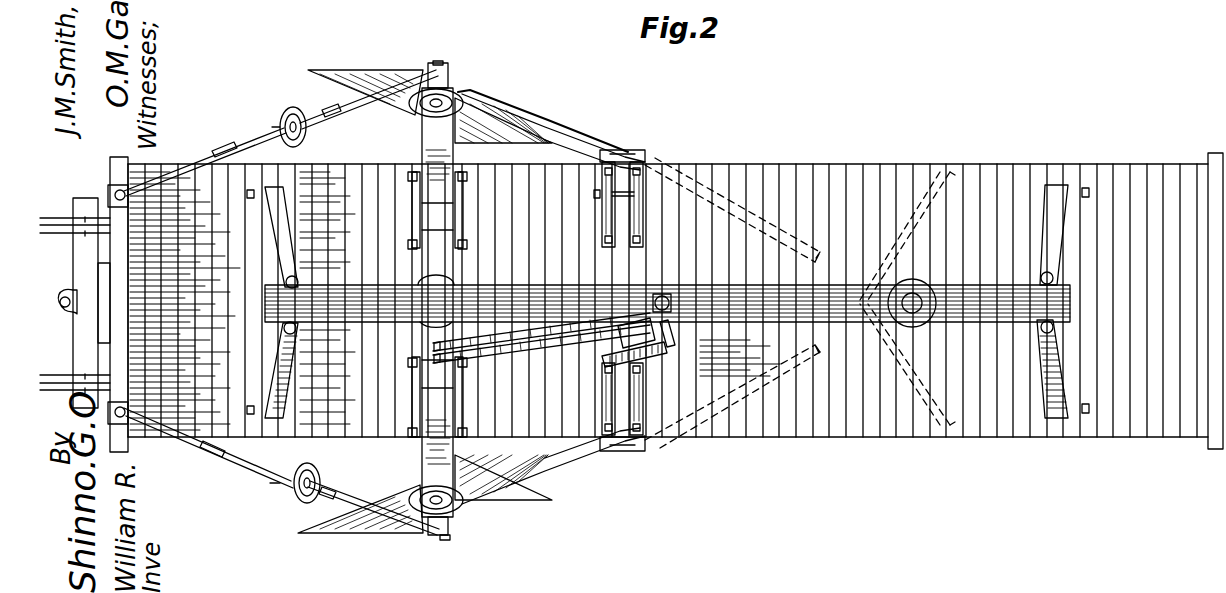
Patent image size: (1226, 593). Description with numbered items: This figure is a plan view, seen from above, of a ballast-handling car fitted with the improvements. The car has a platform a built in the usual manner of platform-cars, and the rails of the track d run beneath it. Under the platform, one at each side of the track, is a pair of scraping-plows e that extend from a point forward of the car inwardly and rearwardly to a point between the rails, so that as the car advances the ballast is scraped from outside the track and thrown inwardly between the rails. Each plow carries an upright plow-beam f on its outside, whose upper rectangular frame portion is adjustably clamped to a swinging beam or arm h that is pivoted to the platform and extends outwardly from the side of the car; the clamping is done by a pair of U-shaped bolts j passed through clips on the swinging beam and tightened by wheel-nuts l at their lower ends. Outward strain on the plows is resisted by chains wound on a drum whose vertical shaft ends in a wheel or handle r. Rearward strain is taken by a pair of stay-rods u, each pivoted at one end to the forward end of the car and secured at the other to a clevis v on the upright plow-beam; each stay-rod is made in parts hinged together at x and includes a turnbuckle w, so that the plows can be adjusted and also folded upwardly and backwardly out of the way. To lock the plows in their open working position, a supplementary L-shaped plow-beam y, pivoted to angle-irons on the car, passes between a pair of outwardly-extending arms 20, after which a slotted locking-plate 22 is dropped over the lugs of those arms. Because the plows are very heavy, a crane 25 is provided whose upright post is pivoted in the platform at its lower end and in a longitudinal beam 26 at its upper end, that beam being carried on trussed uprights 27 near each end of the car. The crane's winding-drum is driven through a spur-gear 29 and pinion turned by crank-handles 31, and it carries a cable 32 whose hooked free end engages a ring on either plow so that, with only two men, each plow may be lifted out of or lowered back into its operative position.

The platform a is at (986, 440).
The track d is at (60, 377).
The scraping-plow e is at (508, 130).
The upright plow-beam f is at (448, 72).
The swinging beam or arm h is at (425, 156).
The U-shaped bolt j is at (436, 301).
The wheel-nut l is at (470, 105).
The wheel or handle r is at (420, 282).
The stay-rod u is at (252, 146).
The clevis v is at (436, 65).
The turnbuckle w is at (292, 110).
The hinge x is at (220, 152).
The supplementary L-shaped plow-beam y is at (615, 185).
The outwardly-extending arm 20 is at (640, 166).
The slotted locking-plate 22 is at (624, 155).
The crane 25 is at (545, 346).
The longitudinal beam 26 is at (888, 303).
The trussed upright 27 is at (1046, 368).
The spur-gear 29 is at (649, 362).
The crank-handle 31 is at (735, 365).
The cable 32 is at (499, 346).